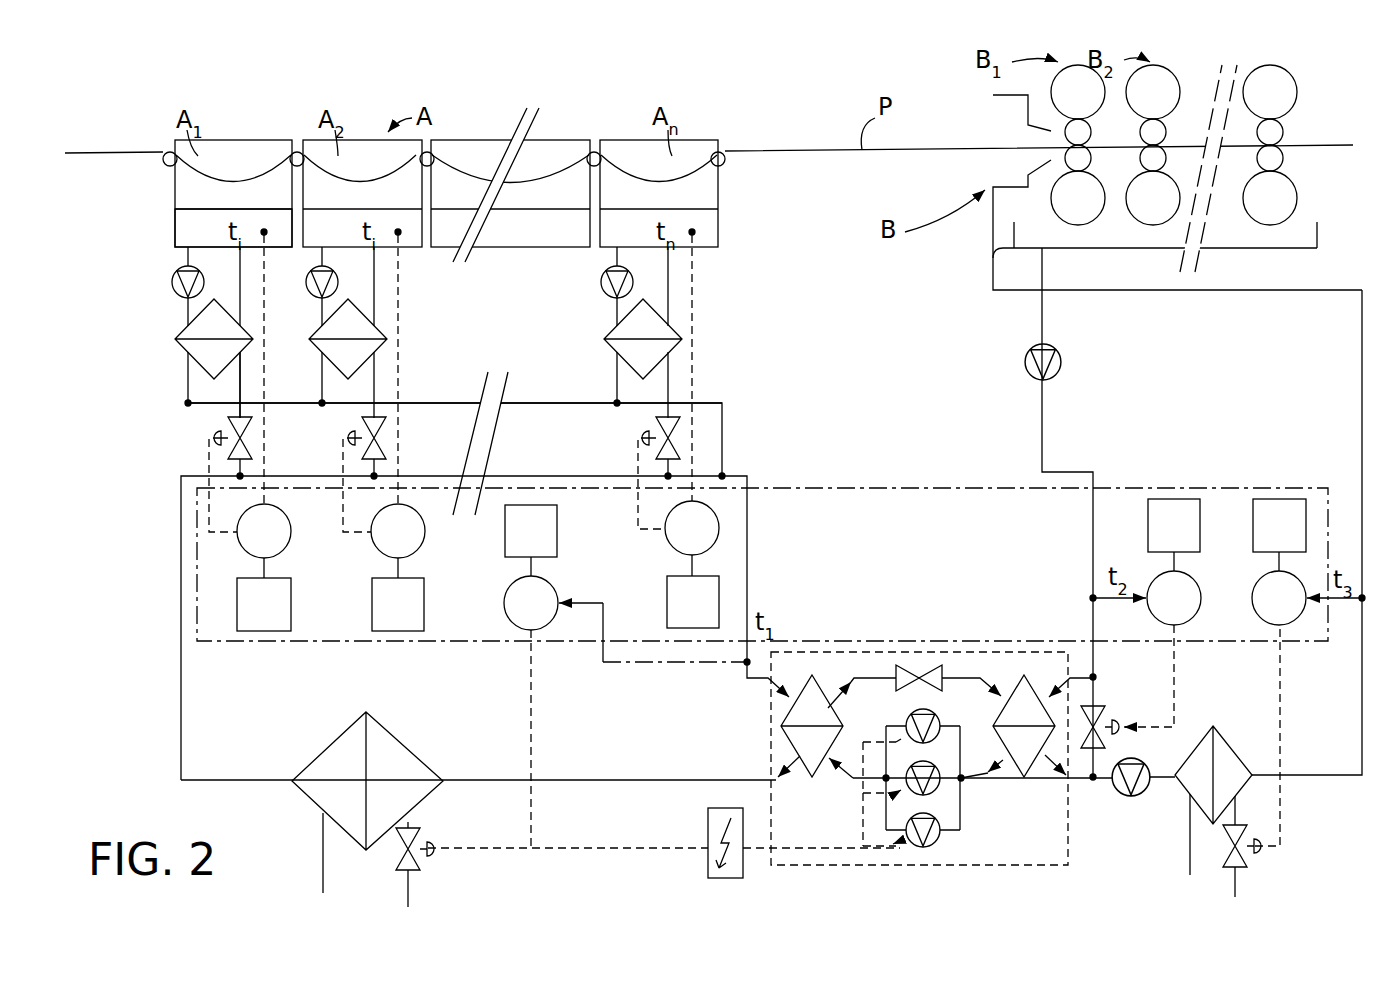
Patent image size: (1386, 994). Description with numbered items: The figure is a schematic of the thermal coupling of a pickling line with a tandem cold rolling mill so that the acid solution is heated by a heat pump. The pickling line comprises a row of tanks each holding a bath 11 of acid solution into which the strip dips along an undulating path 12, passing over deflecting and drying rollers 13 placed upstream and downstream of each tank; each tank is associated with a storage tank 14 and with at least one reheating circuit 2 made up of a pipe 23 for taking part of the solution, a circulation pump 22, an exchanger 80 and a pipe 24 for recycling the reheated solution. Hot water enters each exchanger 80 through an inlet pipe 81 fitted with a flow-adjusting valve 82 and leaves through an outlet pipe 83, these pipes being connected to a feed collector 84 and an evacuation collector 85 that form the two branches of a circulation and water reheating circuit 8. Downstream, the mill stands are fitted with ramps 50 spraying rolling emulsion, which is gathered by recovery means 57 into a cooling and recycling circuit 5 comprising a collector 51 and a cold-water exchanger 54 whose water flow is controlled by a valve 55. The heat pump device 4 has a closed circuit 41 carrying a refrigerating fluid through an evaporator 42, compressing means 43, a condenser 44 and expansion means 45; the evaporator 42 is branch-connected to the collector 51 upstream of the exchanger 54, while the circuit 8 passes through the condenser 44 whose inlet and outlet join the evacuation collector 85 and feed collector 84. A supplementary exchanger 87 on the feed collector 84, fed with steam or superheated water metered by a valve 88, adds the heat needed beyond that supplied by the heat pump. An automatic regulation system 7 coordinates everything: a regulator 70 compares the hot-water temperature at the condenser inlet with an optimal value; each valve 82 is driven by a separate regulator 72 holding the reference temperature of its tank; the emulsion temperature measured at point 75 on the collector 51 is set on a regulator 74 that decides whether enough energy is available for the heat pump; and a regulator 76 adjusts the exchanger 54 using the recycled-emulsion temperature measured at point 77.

The reheating circuit 2 is at (400, 332).
The heat pump device 4 is at (941, 759).
The cooling and recycling circuit 5 is at (1030, 312).
The automatic regulation system 7 is at (870, 486).
The circulation and water reheating circuit 8 is at (501, 671).
The bath of acid solution 11 is at (198, 195).
The undulating path 12 is at (245, 175).
The deflecting and drying rollers 13 is at (166, 165).
The storage tank 14 is at (190, 224).
The circulation pump 22 is at (176, 288).
The pipe for taking solution 23 is at (188, 265).
The recycling pipe 24 is at (240, 278).
The closed refrigerant circuit 41 is at (968, 780).
The evaporator 42 is at (1032, 765).
The compressing means 43 is at (947, 816).
The condenser 44 is at (815, 700).
The expansion means 45 is at (920, 665).
The spray ramps 50 is at (1040, 170).
The recovery collector 51 is at (1043, 420).
The exchanger 54 is at (1232, 742).
The valve 55 is at (1255, 850).
The emulsion recovery means 57 is at (1000, 252).
The regulator 70 is at (505, 603).
The regulator 72 is at (290, 540).
The regulator 74 is at (1188, 622).
The measuring point 75 is at (1093, 598).
The regulator 76 is at (1290, 623).
The measuring point 77 is at (1356, 602).
The exchanger 80 is at (205, 332).
The hot water inlet pipe 81 is at (242, 392).
The valve 82 is at (222, 437).
The hot water outlet pipe 83 is at (188, 373).
The feed collector 84 is at (578, 475).
The evacuation collector 85 is at (540, 405).
The exchanger 87 is at (318, 758).
The valve 88 is at (430, 860).